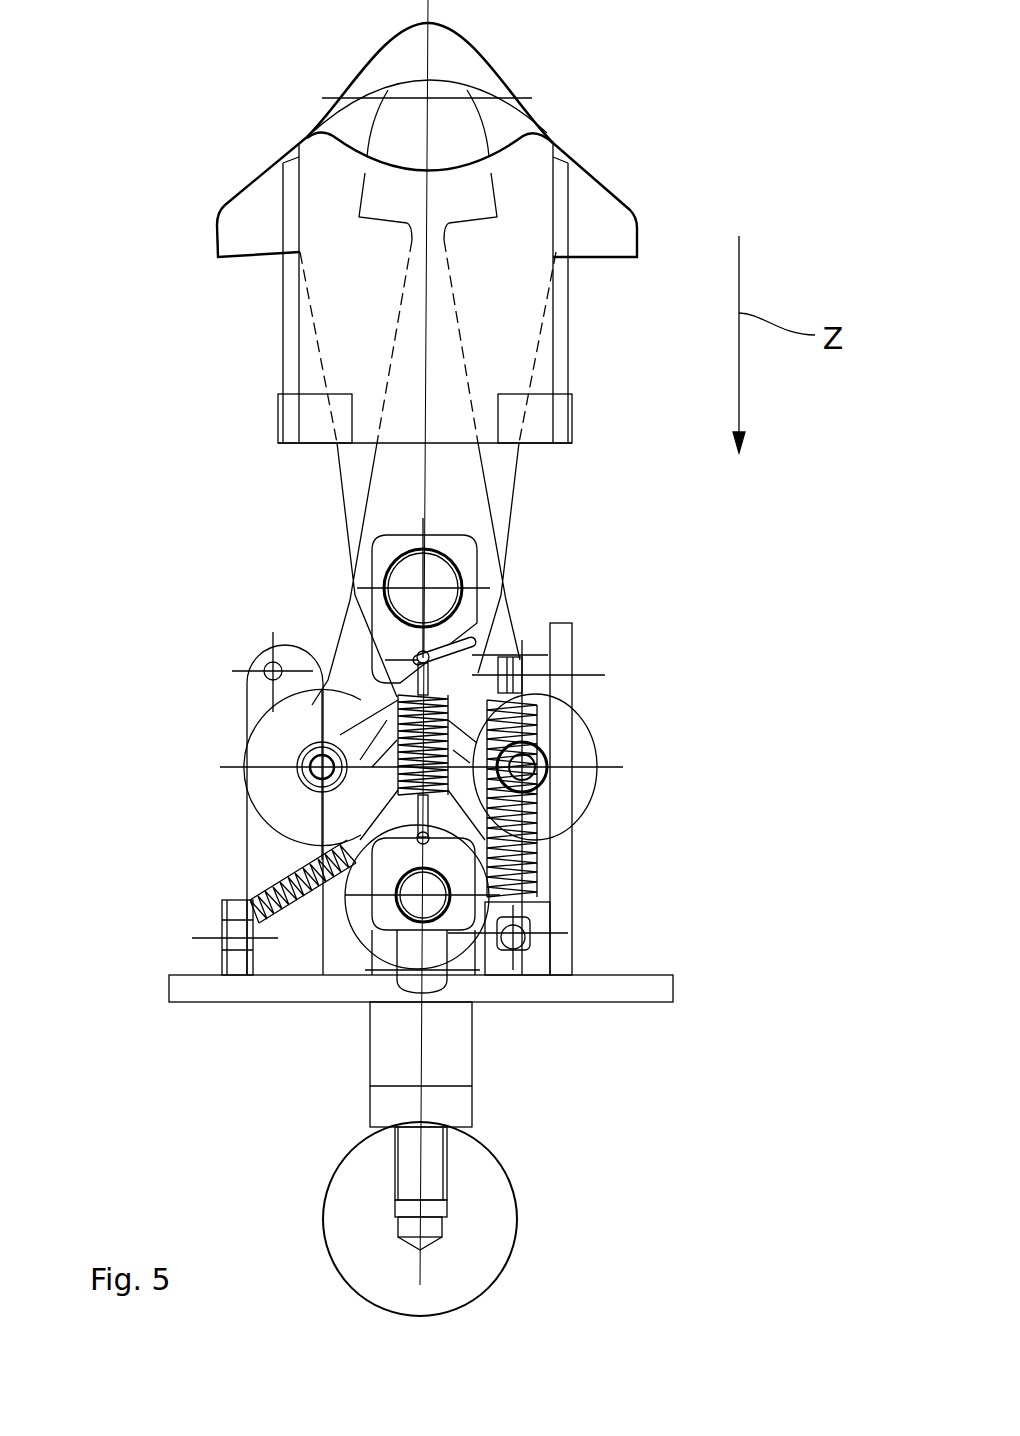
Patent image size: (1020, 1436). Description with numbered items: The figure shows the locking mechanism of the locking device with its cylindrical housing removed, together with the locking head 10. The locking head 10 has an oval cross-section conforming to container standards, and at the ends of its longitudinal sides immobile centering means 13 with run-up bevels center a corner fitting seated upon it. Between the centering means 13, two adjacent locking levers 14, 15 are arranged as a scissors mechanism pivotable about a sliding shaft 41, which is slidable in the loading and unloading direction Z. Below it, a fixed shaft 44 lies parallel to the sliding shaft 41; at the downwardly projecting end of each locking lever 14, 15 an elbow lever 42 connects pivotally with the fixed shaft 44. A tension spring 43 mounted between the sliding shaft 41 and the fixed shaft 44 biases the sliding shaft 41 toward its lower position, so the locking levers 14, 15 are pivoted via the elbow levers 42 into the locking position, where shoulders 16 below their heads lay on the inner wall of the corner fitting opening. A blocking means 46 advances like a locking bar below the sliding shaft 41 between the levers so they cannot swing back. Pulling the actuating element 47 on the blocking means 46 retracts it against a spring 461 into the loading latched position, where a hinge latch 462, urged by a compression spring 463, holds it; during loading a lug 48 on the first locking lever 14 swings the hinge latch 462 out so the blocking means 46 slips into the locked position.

The locking head 10 is at (229, 158).
The centering means 13 is at (465, 50).
The shoulders 16 is at (257, 257).
The first locking lever 14 is at (345, 470).
The second locking lever 15 is at (493, 470).
The sliding shaft 41 is at (437, 577).
The tension spring 43 is at (400, 745).
The hinge latch 462 is at (263, 702).
The lug 48 is at (300, 728).
The elbow lever 42 is at (560, 833).
The spring 461 is at (548, 858).
The fixed shaft 44 is at (432, 890).
The compression spring 463 is at (312, 915).
The blocking means 46 is at (448, 1040).
The actuating element 47 is at (450, 1258).